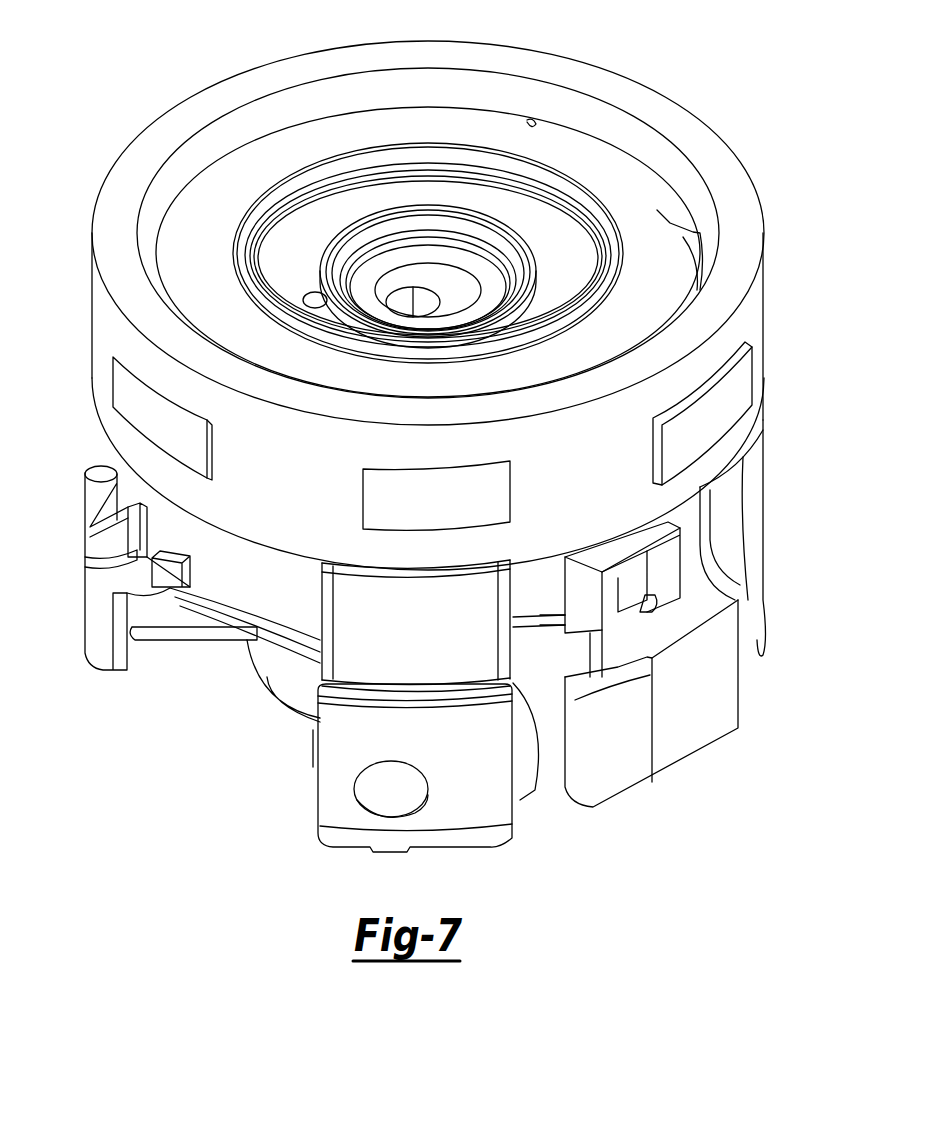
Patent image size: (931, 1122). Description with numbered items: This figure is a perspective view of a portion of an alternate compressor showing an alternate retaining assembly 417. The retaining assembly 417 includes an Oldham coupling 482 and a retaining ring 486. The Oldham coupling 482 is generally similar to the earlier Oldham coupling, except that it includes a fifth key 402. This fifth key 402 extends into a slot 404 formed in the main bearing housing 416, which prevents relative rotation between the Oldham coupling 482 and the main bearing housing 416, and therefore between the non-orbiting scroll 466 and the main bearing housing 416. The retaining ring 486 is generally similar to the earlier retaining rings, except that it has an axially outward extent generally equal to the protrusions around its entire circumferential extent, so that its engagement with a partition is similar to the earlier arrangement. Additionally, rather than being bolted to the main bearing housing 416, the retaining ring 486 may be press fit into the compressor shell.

The retaining assembly 417 is at (96, 158).
The non-orbiting scroll 466 is at (493, 125).
The retaining ring 486 is at (657, 112).
The main bearing housing 416 is at (765, 567).
The Oldham coupling 482 is at (650, 638).
The slot 404 is at (632, 680).
The fifth key 402 is at (623, 672).